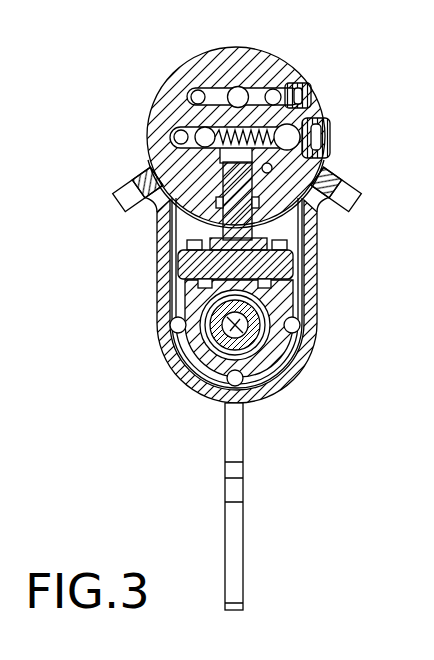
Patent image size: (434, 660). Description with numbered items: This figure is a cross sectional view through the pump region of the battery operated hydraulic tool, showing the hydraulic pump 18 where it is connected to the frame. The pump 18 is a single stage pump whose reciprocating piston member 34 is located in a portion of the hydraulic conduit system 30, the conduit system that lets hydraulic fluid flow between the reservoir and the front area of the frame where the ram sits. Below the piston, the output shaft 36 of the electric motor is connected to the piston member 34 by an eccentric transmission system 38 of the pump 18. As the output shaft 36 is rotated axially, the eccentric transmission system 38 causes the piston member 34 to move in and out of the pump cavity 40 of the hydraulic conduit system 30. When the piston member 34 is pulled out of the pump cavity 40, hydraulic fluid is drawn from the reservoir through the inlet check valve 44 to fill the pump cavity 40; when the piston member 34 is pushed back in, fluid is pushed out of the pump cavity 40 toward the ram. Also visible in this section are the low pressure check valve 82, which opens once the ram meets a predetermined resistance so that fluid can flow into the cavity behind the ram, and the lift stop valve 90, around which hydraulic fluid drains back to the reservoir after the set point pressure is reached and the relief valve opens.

The hydraulic pump 18 is at (305, 237).
The hydraulic conduit system 30 is at (312, 116).
The reciprocating piston member 34 is at (230, 204).
The output shaft 36 is at (257, 355).
The eccentric transmission system 38 is at (294, 262).
The pump cavity 40 is at (175, 158).
The inlet check valve 44 is at (172, 125).
The low pressure check valve 82 is at (190, 84).
The lift stop valve 90 is at (262, 78).